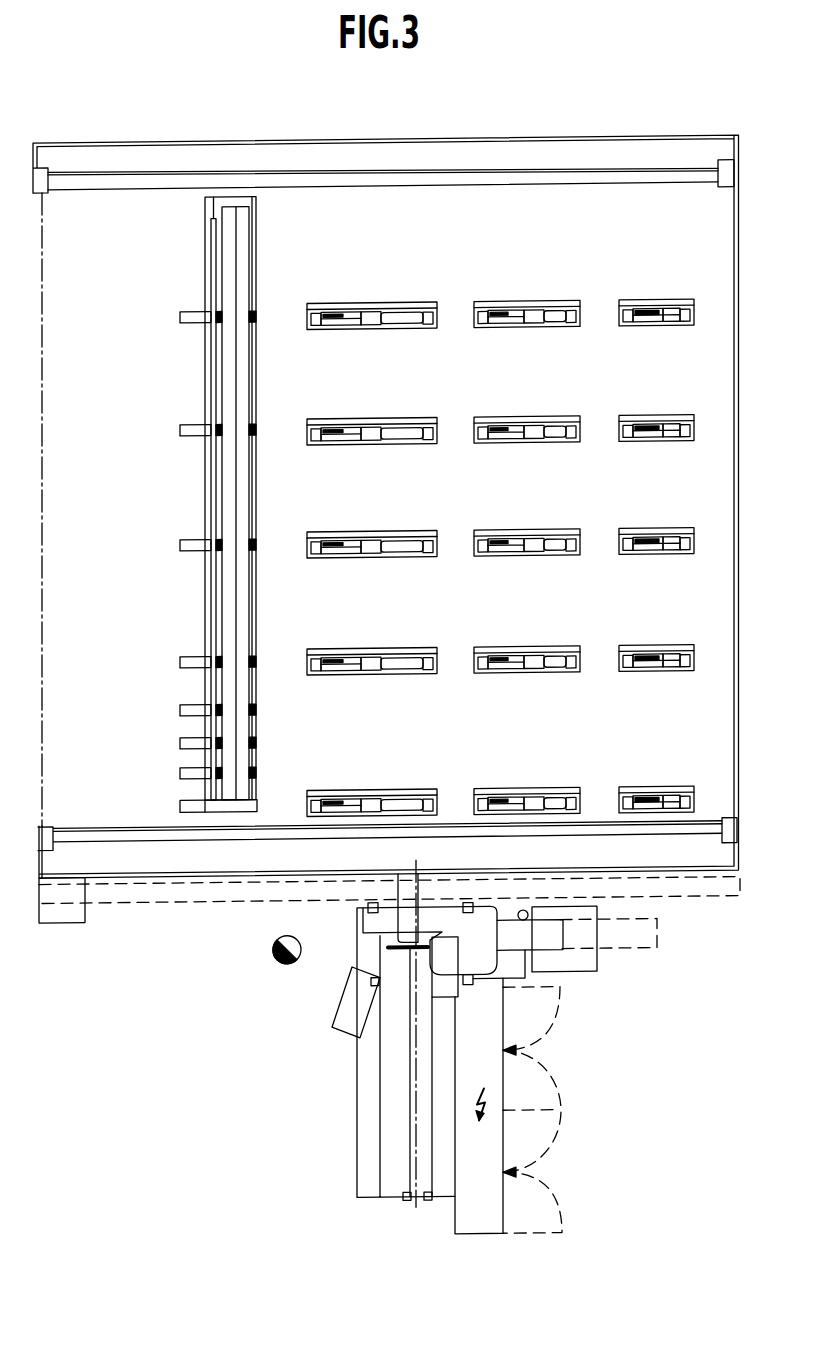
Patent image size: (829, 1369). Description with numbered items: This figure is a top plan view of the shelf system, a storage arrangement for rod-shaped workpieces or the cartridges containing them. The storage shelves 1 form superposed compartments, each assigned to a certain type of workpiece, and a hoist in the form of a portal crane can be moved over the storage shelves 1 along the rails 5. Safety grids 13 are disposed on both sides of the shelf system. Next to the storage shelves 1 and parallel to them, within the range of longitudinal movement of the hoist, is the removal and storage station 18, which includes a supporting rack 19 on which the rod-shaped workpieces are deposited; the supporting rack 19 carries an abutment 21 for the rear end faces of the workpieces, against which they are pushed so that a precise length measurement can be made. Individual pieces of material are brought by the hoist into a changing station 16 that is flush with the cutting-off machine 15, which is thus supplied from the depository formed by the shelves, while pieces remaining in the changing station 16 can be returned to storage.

The storage shelves 1 is at (538, 292).
The rails 5 is at (672, 179).
The safety grids 13 is at (243, 144).
The cutting-off machine 15 is at (350, 1120).
The changing station 16 is at (395, 307).
The removal and storage station 18 is at (190, 259).
The supporting rack 19 is at (180, 547).
The abutment 21 is at (232, 808).